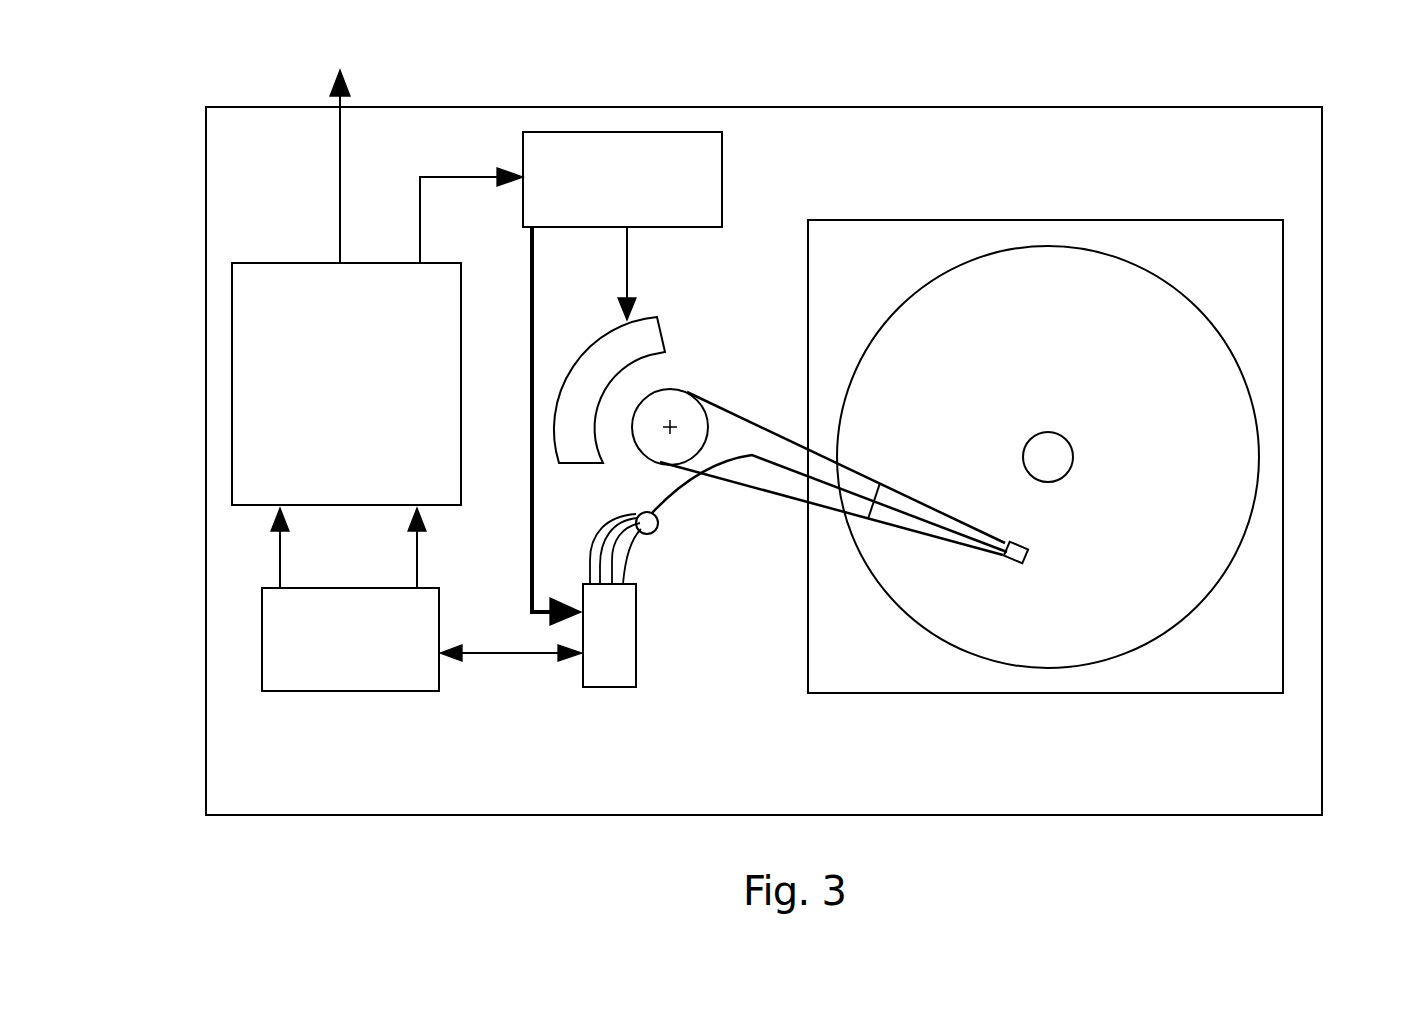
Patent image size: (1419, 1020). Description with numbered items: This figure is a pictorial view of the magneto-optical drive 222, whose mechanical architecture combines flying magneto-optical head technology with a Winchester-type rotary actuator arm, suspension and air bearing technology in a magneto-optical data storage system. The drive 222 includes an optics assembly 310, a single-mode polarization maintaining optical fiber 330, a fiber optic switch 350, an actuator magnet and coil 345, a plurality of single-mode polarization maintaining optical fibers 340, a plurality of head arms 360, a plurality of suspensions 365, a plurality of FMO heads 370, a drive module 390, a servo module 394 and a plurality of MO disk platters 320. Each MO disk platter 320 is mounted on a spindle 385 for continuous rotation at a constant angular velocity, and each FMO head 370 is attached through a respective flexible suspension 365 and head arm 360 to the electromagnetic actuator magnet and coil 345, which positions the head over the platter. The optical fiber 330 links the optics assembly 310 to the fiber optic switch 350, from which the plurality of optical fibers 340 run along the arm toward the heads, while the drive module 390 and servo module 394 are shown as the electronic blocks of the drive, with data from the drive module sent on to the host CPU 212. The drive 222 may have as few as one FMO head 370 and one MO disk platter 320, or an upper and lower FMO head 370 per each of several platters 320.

The host CPU 212 is at (339, 153).
The magneto-optical drive 222 is at (969, 843).
The optics assembly 310 is at (315, 676).
The MO disk platter 320 is at (1193, 440).
The Single-Mode Polarization Maintaining optical fiber 330 is at (515, 655).
The plurality of SMPM optical fibers 340 is at (637, 558).
The actuator magnet and coil 345 is at (647, 338).
The fiber optic switch 350 is at (626, 668).
The head arm 360 is at (857, 482).
The suspension 365 is at (917, 508).
The FMO head 370 is at (1023, 558).
The spindle 385 is at (1055, 460).
The drive module 390 is at (277, 262).
The servo module 394 is at (722, 178).